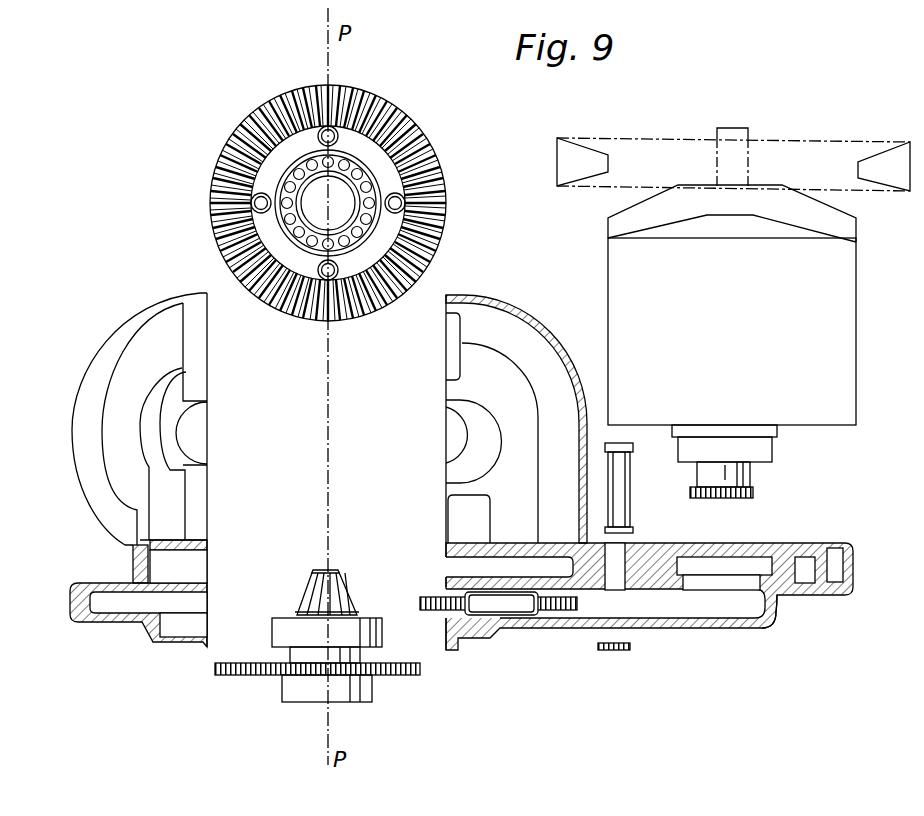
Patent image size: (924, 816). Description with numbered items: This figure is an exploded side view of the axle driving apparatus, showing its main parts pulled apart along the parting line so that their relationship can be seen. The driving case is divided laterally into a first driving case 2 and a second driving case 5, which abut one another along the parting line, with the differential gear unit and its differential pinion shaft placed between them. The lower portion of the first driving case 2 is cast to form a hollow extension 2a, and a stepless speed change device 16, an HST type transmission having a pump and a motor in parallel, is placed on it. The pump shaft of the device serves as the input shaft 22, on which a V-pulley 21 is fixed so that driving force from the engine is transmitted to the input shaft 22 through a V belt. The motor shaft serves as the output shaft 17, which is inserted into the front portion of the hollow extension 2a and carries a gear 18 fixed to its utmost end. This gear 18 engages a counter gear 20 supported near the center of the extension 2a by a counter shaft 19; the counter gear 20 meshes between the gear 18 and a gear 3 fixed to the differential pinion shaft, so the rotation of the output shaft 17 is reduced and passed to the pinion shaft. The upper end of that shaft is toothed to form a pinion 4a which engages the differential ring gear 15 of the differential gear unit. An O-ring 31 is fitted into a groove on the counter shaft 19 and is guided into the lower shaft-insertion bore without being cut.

The first driving case 2 is at (552, 343).
The hollow extension 2a is at (776, 618).
The gear 3 is at (421, 668).
The pinion 4a is at (350, 588).
The second driving case 5 is at (89, 503).
The differential ring gear 15 is at (218, 250).
The stepless speed change device 16 is at (760, 337).
The output shaft 17 is at (752, 472).
The gear 18 is at (740, 498).
The counter shaft 19 is at (633, 517).
The counter gear 20 is at (578, 604).
The V-pulley 21 is at (561, 176).
The input shaft 22 is at (748, 128).
The O-ring 31 is at (607, 651).